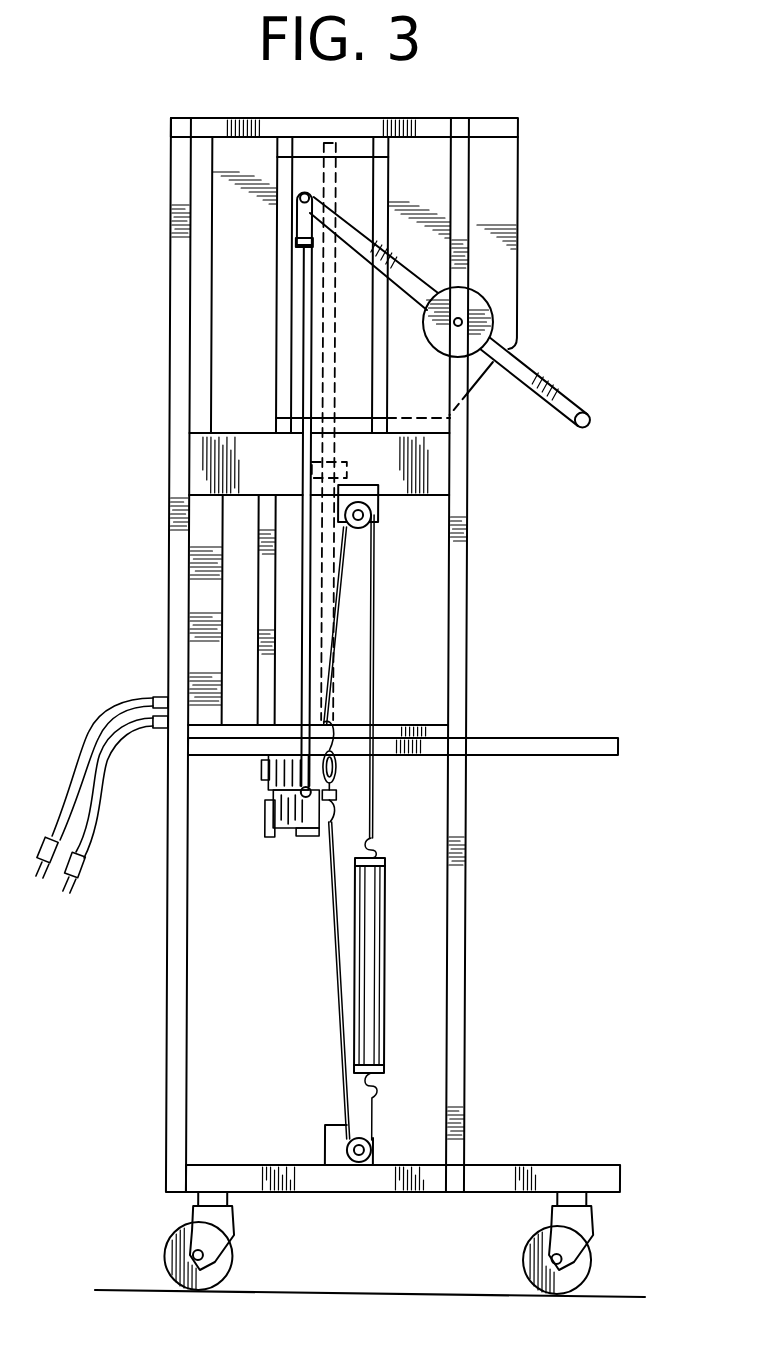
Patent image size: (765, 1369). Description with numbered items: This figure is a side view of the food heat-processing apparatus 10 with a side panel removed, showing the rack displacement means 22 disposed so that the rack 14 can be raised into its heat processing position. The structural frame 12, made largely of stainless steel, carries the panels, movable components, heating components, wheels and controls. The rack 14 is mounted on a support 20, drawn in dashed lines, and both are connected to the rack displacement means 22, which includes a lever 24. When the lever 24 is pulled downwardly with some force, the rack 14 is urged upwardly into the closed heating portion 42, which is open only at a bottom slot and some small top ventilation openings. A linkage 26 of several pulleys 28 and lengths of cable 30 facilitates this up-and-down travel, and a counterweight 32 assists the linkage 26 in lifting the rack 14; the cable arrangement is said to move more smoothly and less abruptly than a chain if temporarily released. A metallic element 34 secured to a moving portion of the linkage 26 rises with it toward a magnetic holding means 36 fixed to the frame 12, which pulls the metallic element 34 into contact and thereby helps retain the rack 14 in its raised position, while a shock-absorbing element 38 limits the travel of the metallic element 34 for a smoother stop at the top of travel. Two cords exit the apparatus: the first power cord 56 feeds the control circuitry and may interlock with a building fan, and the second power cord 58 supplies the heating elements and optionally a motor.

The apparatus 10 is at (563, 160).
The structural frame 12 is at (461, 900).
The rack 14 is at (335, 345).
The support 20 is at (336, 147).
The rack displacement means 22 is at (392, 589).
The lever 24 is at (592, 415).
The linkage 26 is at (408, 1078).
The pulleys 28 is at (380, 510).
The cable 30 is at (377, 815).
The counterweight 32 is at (378, 970).
The metallic element 34 is at (284, 790).
The magnetic holding means 36 is at (298, 760).
The shock-absorbing element 38 is at (269, 770).
The heating portion 42 is at (499, 283).
The first power cord 56 is at (103, 717).
The second power cord 58 is at (122, 755).